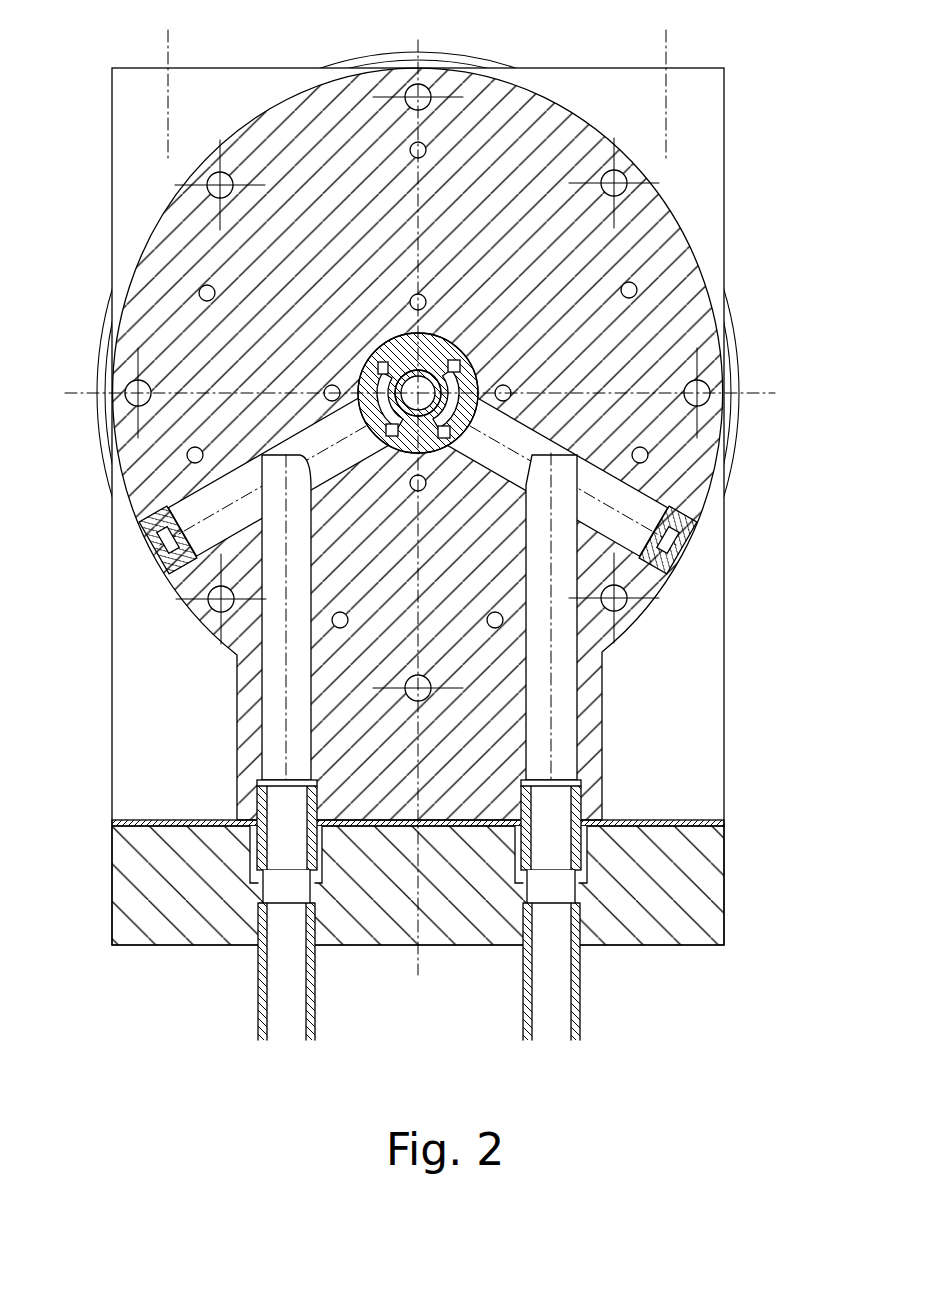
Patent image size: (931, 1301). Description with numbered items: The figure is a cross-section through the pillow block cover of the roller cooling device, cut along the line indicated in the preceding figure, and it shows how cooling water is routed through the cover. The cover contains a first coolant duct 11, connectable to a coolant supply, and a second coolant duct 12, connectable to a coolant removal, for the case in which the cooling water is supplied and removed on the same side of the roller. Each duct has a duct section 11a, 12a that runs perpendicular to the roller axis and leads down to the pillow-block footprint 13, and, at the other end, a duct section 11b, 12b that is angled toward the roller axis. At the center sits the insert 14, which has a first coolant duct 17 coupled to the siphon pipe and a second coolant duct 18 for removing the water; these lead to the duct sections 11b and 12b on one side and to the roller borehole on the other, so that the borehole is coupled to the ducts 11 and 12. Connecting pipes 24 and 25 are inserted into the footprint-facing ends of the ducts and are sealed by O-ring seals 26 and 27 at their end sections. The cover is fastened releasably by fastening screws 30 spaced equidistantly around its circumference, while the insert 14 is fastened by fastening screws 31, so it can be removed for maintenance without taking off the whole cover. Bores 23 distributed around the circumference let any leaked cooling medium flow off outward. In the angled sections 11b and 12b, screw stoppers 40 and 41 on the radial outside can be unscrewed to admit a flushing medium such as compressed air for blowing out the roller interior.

The first coolant duct 11 is at (287, 718).
The duct section 11a is at (312, 668).
The duct section 11b is at (350, 466).
The second coolant duct 12 is at (552, 718).
The duct section 12a is at (526, 720).
The duct section 12b is at (500, 458).
The pillow-block footprint 13 is at (660, 818).
The insert 14 is at (456, 346).
The first coolant duct 17 is at (402, 352).
The second coolant duct 18 is at (378, 372).
The bores 23 is at (411, 155).
The connecting pipe 24 is at (256, 816).
The connecting pipe 25 is at (585, 796).
The O-ring seal 26 is at (256, 791).
The O-ring seal 27 is at (254, 858).
The fastening screws 30 is at (421, 84).
The fastening screws 31 is at (426, 297).
The screw stopper 40 is at (145, 560).
The screw stopper 41 is at (690, 542).